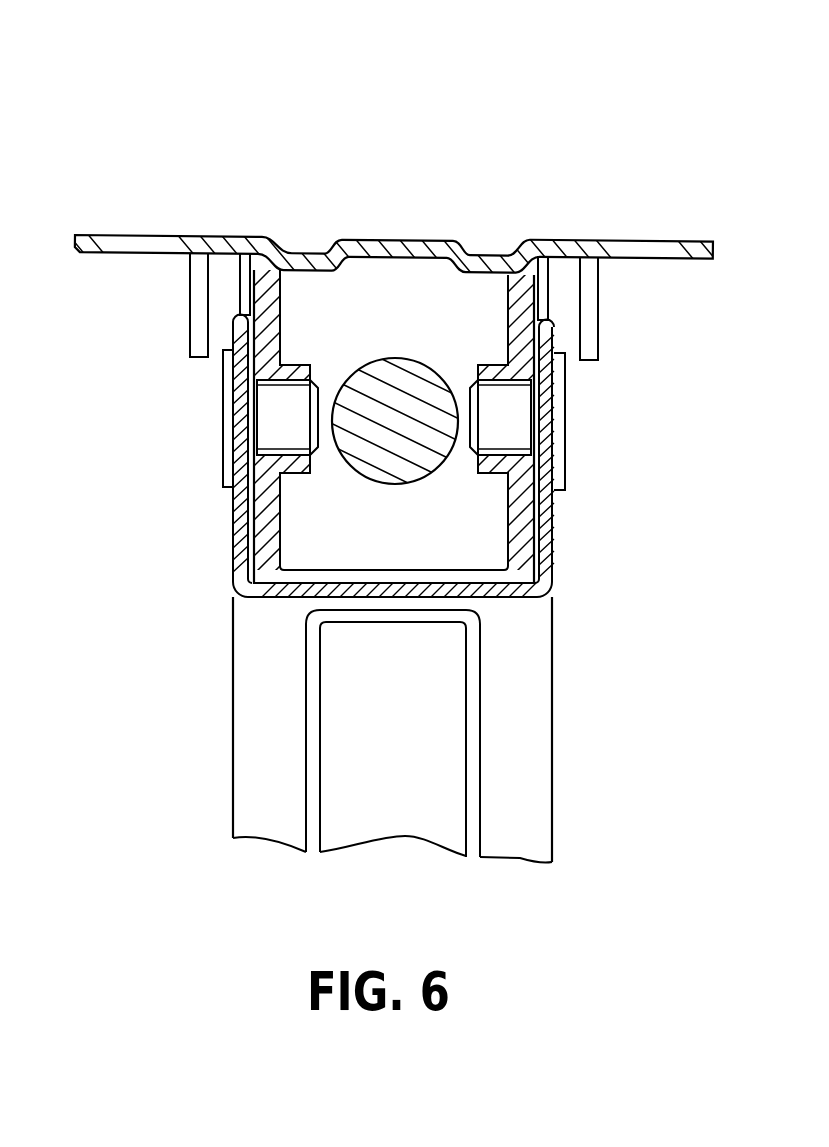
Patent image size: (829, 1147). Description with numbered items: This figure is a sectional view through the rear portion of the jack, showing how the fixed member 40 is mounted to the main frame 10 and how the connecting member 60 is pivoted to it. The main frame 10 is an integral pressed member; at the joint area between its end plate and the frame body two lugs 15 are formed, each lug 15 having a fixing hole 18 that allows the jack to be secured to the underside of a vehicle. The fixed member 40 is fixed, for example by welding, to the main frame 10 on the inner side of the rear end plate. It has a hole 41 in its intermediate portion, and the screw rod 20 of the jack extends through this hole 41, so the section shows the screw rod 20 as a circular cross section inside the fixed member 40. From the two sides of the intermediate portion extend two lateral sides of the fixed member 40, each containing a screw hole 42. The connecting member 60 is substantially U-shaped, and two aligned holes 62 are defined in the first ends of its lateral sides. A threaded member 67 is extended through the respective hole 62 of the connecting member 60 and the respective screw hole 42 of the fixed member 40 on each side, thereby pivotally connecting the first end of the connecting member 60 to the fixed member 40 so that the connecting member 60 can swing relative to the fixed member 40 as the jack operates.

The main frame 10 is at (381, 187).
The lug 15 is at (94, 253).
The fixing hole 18 is at (138, 237).
The screw rod 20 is at (454, 256).
The hole 41 is at (423, 362).
The fixed member 40 is at (520, 524).
The screw hole 42 is at (503, 457).
The threaded member 67 is at (287, 417).
The hole 62 is at (237, 457).
The connecting member 60 is at (533, 732).